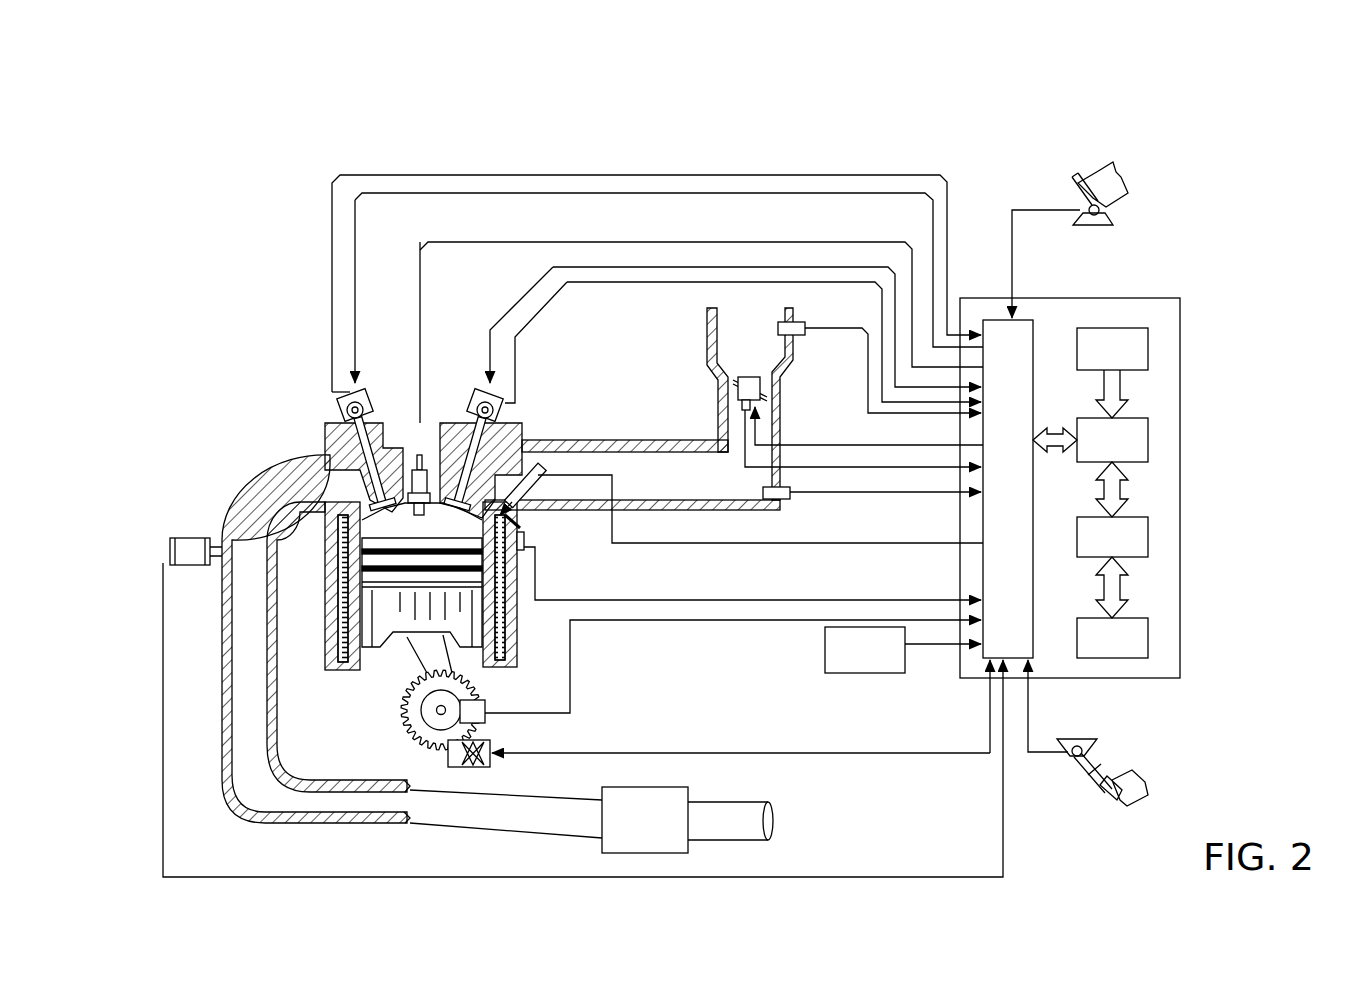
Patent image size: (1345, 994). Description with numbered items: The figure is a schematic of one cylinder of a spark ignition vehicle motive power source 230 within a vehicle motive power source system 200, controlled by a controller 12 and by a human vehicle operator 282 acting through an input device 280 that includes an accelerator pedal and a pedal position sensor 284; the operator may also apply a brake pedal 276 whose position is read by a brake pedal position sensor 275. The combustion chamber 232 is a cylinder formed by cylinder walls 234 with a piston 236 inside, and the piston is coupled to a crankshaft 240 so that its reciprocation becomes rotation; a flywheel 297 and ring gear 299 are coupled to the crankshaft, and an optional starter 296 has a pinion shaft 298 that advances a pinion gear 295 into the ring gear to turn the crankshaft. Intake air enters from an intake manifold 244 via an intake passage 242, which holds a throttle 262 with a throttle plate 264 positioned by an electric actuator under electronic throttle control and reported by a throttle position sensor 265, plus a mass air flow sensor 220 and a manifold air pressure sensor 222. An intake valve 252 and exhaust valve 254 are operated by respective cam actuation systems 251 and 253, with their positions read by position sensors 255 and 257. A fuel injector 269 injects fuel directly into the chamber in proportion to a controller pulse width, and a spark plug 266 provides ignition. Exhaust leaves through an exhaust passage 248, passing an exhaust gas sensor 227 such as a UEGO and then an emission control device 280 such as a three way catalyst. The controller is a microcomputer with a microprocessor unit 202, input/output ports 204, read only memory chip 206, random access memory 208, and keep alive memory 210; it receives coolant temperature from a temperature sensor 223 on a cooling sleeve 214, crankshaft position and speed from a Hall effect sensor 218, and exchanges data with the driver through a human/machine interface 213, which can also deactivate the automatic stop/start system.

The vehicle motive power source system 200 is at (1218, 103).
The controller 12 is at (1180, 298).
The input/output ports 204 is at (1033, 325).
The read only memory chip 206 is at (1148, 350).
The microprocessor unit 202 is at (1148, 440).
The random access memory 208 is at (1148, 538).
The keep alive memory 210 is at (1148, 638).
The human/machine interface 213 is at (903, 650).
The cooling sleeve 214 is at (512, 660).
The Hall effect sensor 218 is at (485, 712).
The mass air flow sensor 220 is at (798, 320).
The manifold air pressure sensor 222 is at (785, 500).
The temperature sensor 223 is at (535, 548).
The exhaust gas sensor 227 is at (170, 545).
The vehicle motive power source 230 is at (262, 378).
The combustion chamber 232 is at (362, 560).
The cylinder walls 234 is at (362, 672).
The piston 236 is at (405, 630).
The crankshaft 240 is at (416, 729).
The intake passage 242 is at (750, 404).
The intake manifold 244 is at (632, 475).
The exhaust passage 248 is at (412, 646).
The cam actuation system 251 is at (478, 398).
The intake valve 252 is at (540, 475).
The cam actuation system 253 is at (365, 398).
The exhaust valve 254 is at (372, 480).
The position sensor 255 is at (508, 400).
The position sensor 257 is at (347, 406).
The throttle 262 is at (767, 393).
The throttle plate 264 is at (738, 388).
The throttle position sensor 265 is at (742, 405).
The spark plug 266 is at (421, 452).
The fuel injector 269 is at (522, 522).
The brake pedal position sensor 275 is at (1062, 748).
The brake pedal 276 is at (1100, 795).
The input device / emission control device 280 is at (1082, 193).
The human vehicle operator 282 is at (1122, 176).
The pedal position sensor 284 is at (1107, 212).
The pinion gear 295 is at (486, 762).
The starter 296 is at (719, 725).
The flywheel 297 is at (418, 710).
The pinion shaft 298 is at (462, 750).
The ring gear 299 is at (430, 738).